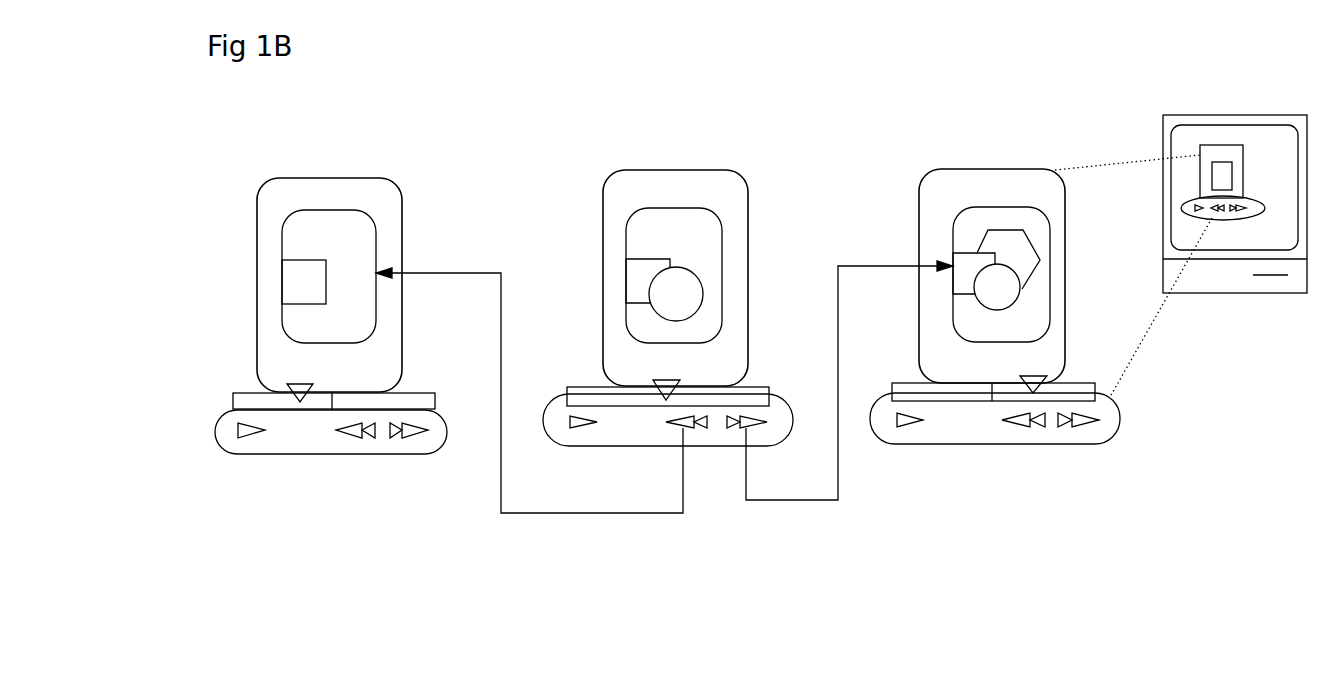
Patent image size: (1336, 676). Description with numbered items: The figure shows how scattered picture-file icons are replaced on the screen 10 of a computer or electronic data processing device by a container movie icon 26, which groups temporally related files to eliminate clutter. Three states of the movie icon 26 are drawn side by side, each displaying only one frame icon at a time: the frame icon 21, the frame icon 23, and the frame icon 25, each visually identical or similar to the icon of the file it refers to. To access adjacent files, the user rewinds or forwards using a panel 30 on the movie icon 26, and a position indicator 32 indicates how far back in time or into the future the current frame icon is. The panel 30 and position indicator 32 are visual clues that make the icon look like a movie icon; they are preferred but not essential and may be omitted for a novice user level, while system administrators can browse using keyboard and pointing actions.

The screen 10 is at (1253, 293).
The frame icon 21 is at (280, 238).
The frame icon 23 is at (626, 247).
The frame icon 25 is at (957, 222).
The container movie icon 26 is at (343, 178).
The panel 30 is at (308, 450).
The position indicator 32 is at (247, 393).